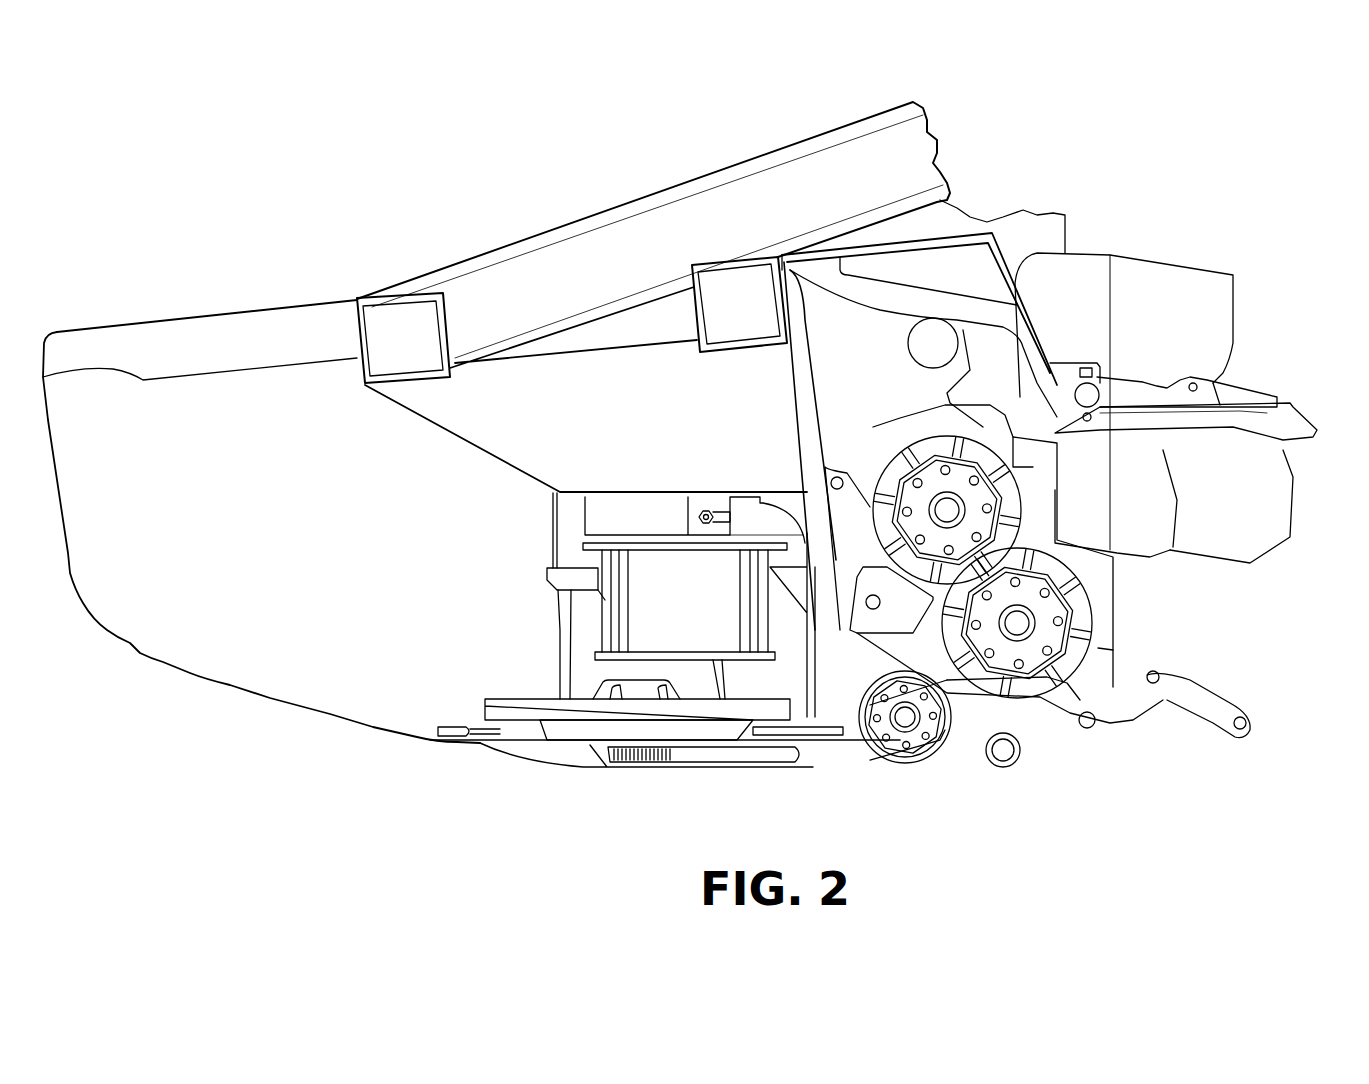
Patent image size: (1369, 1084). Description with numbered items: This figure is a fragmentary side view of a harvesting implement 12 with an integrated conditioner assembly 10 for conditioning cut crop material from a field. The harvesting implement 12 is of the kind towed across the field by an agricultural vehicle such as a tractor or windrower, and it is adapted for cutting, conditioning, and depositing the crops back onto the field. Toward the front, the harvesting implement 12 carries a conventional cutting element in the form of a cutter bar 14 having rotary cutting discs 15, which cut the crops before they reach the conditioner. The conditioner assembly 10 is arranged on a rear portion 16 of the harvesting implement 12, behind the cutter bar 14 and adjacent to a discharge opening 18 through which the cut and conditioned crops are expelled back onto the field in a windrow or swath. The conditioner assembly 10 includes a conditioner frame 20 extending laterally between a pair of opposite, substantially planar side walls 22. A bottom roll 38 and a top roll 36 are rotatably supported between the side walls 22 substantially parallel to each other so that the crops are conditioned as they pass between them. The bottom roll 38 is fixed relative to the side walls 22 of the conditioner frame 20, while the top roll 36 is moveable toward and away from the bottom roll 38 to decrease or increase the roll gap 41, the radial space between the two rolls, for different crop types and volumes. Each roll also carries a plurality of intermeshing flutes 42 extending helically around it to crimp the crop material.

The conditioner assembly 10 is at (990, 707).
The harvesting implement 12 is at (330, 225).
The cutter bar 14 is at (587, 773).
The rotary cutting discs 15 is at (547, 738).
The rear portion 16 is at (1083, 245).
The discharge opening 18 is at (1165, 647).
The conditioner frame 20 is at (1097, 697).
The side walls 22 is at (1052, 703).
The top roll 36 is at (1022, 472).
The bottom roll 38 is at (1098, 648).
The roll gap 41 is at (1010, 560).
The intermeshing flutes 42 is at (997, 450).